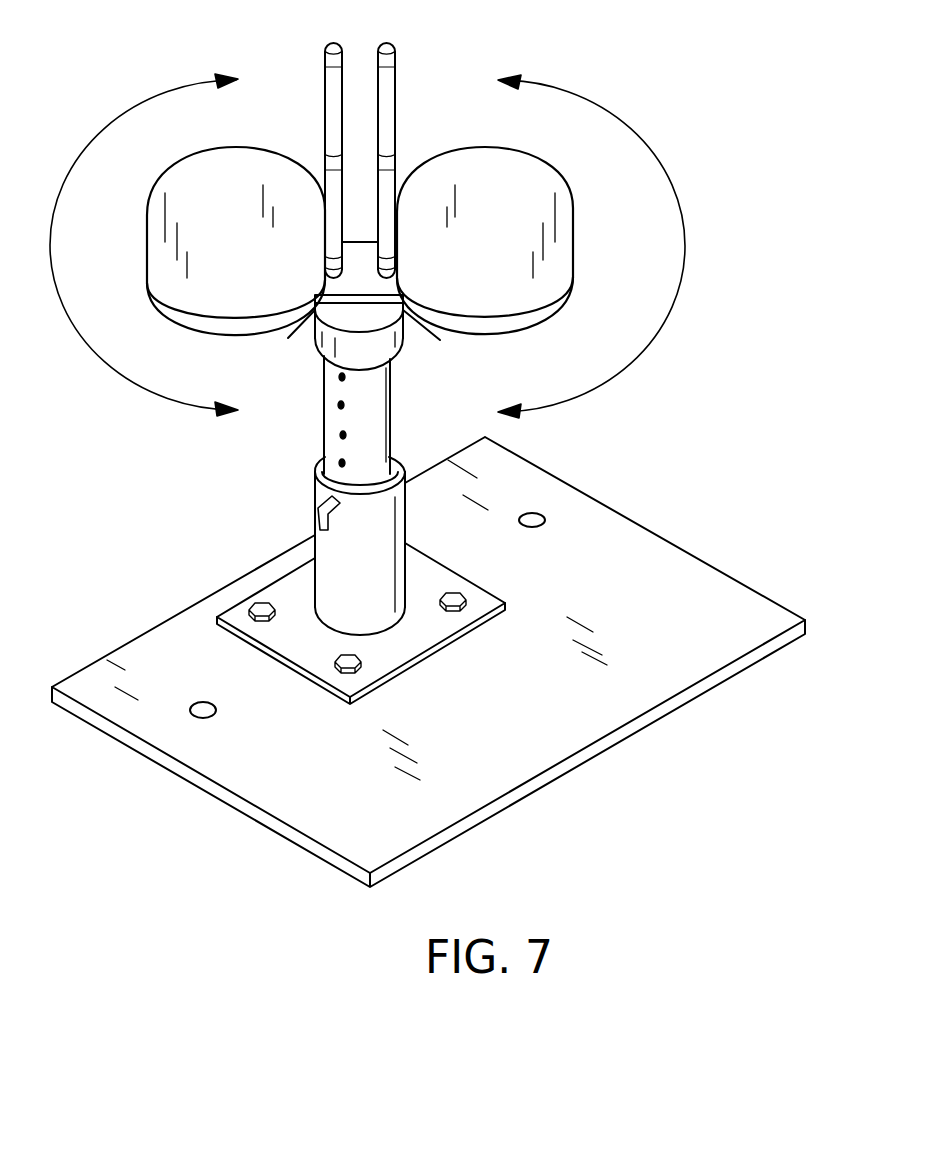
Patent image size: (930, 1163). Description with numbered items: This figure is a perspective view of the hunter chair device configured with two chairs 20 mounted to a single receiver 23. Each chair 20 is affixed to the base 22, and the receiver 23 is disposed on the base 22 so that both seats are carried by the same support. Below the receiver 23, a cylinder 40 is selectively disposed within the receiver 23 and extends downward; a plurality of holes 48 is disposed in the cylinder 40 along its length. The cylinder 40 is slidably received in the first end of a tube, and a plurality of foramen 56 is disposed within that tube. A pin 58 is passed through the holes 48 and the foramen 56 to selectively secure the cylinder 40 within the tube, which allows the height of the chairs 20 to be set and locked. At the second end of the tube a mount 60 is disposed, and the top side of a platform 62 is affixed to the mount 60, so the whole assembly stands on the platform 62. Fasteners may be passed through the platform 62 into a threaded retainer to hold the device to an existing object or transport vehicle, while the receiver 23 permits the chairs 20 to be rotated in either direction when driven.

The chair 20 is at (258, 147).
The base 22 is at (357, 300).
The receiver 23 is at (388, 350).
The cylinder 40 is at (391, 392).
The holes 48 is at (342, 377).
The foramen 56 is at (315, 491).
The pin 58 is at (318, 516).
The mount 60 is at (421, 648).
The platform 62 is at (698, 588).